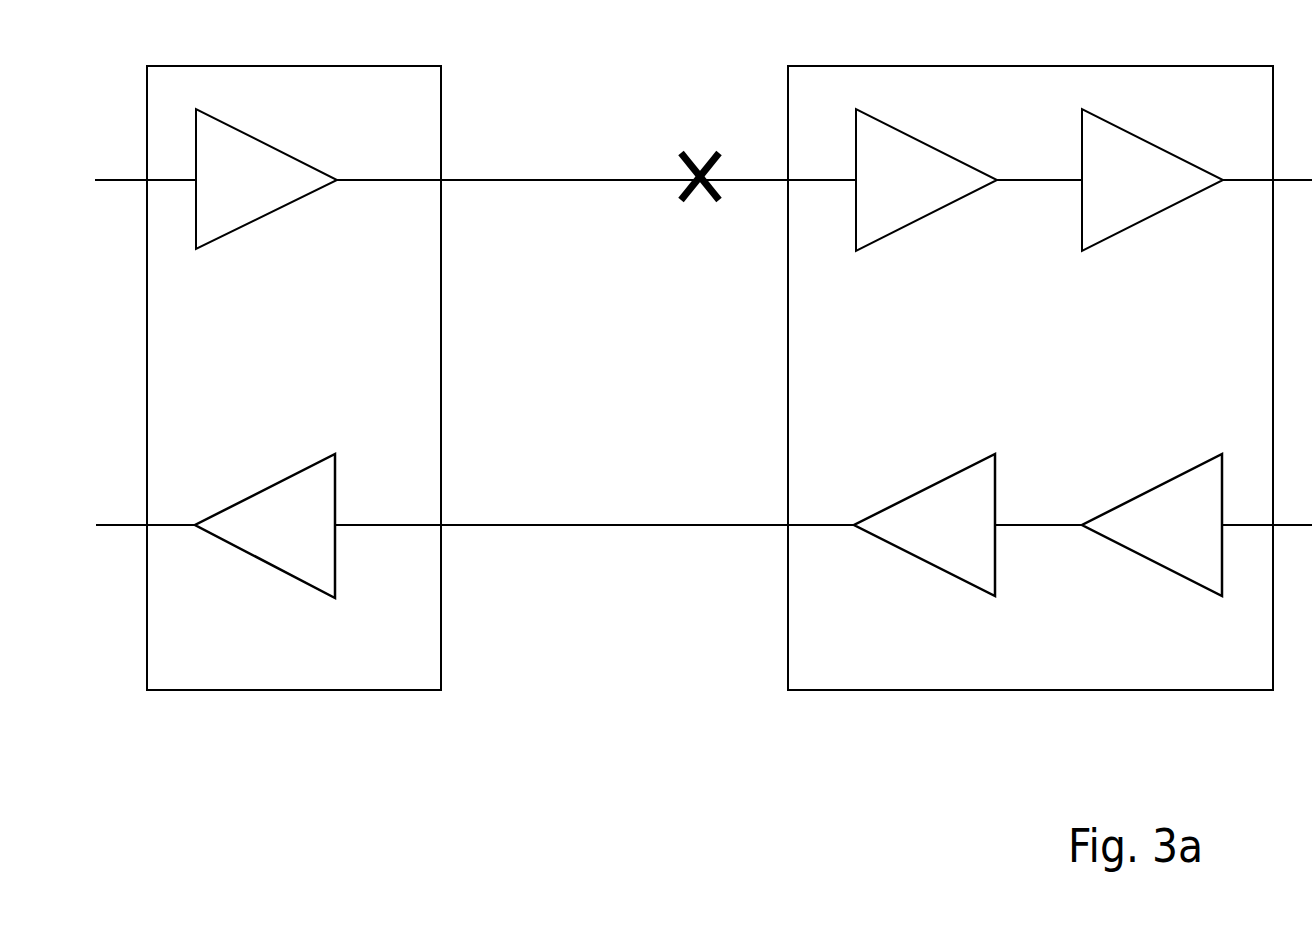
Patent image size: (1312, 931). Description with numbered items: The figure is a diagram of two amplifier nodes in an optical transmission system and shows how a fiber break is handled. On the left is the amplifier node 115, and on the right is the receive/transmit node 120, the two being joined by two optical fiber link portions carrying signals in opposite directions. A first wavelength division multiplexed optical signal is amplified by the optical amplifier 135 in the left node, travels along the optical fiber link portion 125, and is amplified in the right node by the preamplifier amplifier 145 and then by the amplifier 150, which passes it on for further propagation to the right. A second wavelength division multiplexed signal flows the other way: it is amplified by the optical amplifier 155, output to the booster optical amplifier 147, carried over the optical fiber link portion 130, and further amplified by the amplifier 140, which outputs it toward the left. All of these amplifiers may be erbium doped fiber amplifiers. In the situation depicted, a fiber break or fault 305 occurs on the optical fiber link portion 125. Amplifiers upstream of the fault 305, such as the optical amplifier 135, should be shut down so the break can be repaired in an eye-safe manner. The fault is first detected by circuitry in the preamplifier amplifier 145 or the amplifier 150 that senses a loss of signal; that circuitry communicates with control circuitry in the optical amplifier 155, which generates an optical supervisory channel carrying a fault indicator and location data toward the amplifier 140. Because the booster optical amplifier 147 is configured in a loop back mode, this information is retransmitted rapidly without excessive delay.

The amplifier node 115 is at (238, 65).
The receive/transmit node 120 is at (842, 65).
The optical fiber link portion 125 is at (492, 179).
The optical fiber link portion 130 is at (513, 526).
The optical amplifier 135 is at (232, 233).
The amplifier 140 is at (252, 495).
The preamplifier amplifier 145 is at (912, 224).
The booster optical amplifier 147 is at (914, 558).
The amplifier 150 is at (1132, 228).
The optical amplifier 155 is at (1163, 569).
The fault 305 is at (702, 162).